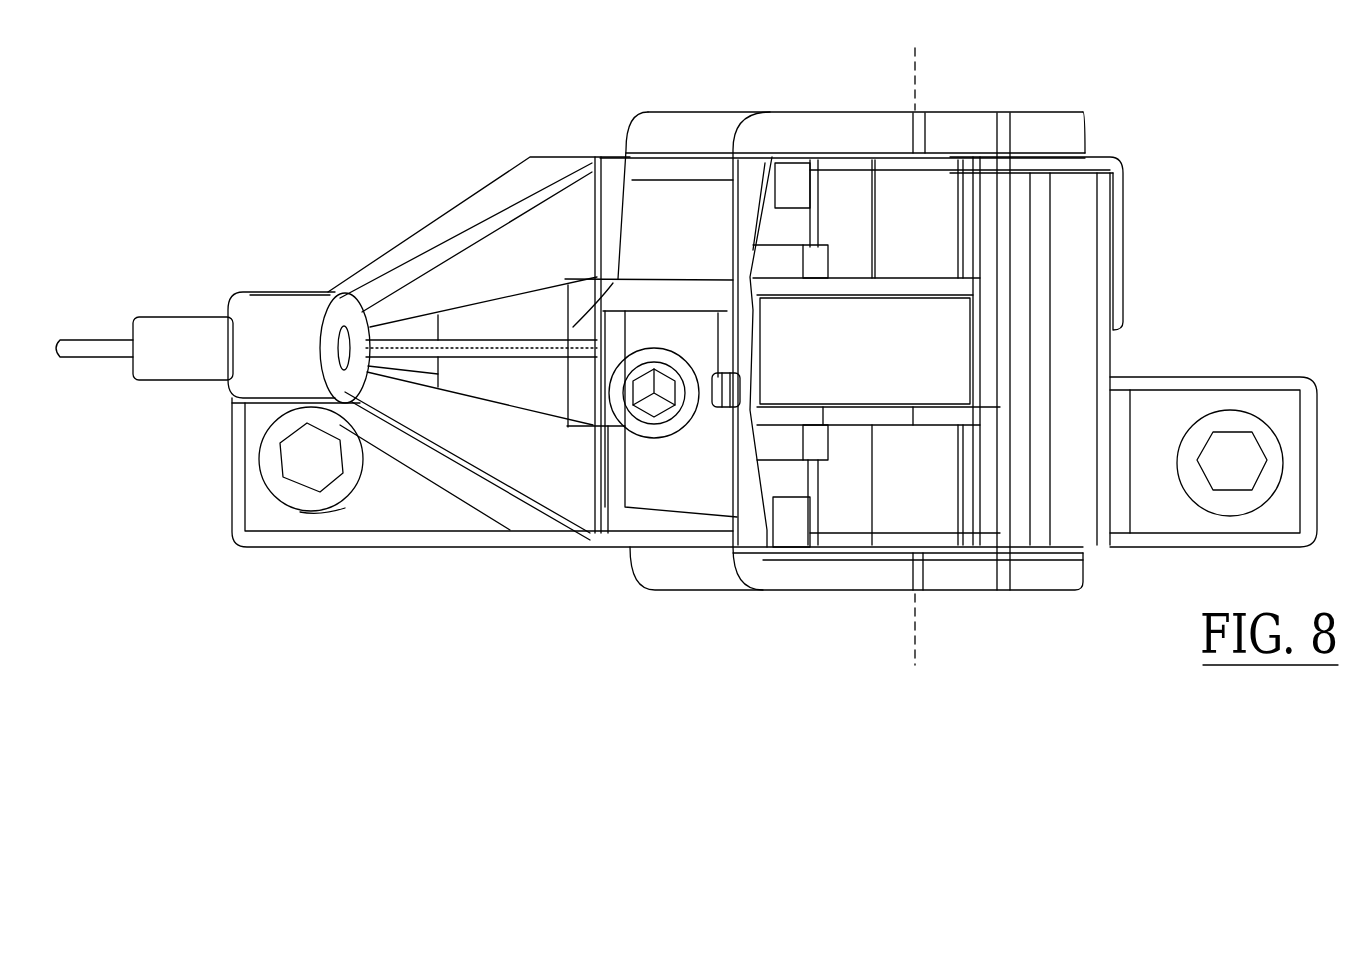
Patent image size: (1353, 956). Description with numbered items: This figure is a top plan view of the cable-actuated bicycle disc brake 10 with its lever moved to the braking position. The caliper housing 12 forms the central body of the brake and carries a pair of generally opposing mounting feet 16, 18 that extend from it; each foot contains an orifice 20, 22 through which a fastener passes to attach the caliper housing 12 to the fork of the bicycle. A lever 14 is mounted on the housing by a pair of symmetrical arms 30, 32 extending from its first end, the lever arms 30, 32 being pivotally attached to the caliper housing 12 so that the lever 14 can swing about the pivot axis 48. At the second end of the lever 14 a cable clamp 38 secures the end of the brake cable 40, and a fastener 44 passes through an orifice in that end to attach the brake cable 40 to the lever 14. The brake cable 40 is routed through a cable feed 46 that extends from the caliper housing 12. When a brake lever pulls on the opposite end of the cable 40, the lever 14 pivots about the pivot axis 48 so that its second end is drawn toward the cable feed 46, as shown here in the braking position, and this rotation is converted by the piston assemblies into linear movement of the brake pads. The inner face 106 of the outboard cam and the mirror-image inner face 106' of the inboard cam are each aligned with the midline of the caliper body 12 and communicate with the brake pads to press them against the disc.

The disc brake 10 is at (1246, 136).
The caliper housing 12 is at (1093, 190).
The lever 14 is at (663, 123).
The mounting foot 16 is at (1285, 392).
The mounting foot 18 is at (232, 523).
The orifice 20 is at (1227, 413).
The orifice 22 is at (323, 502).
The lever arm 30 is at (797, 123).
The lever arm 32 is at (797, 570).
The cable clamp 38 is at (622, 322).
The brake cable 40 is at (90, 340).
The fastener 44 is at (663, 405).
The cable feed 46 is at (282, 323).
The pivot axis 48 is at (913, 637).
The inner face of the cam 106 is at (878, 438).
The inner face of the cam 106' is at (865, 342).